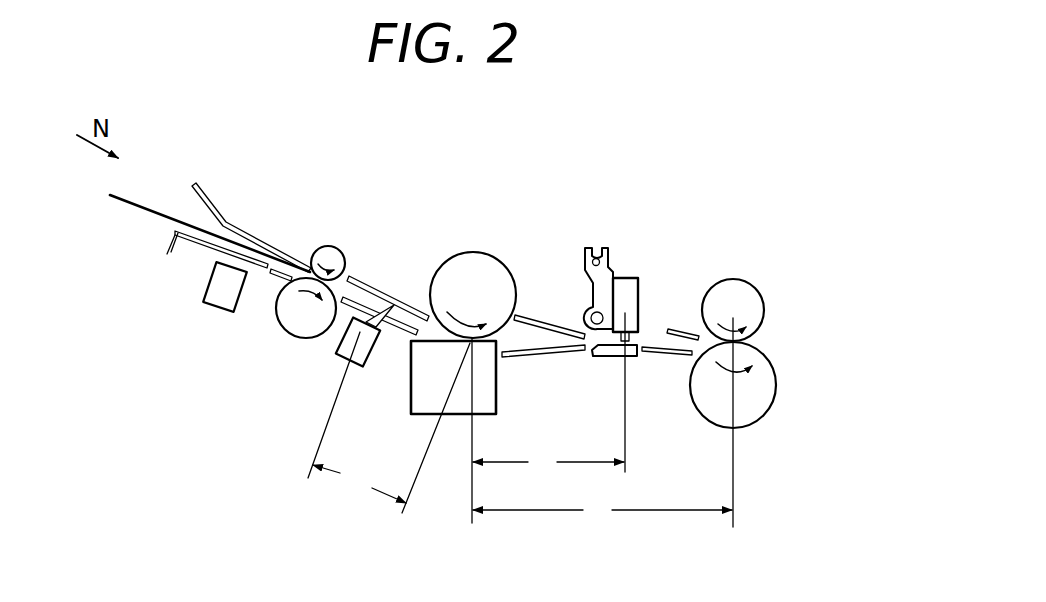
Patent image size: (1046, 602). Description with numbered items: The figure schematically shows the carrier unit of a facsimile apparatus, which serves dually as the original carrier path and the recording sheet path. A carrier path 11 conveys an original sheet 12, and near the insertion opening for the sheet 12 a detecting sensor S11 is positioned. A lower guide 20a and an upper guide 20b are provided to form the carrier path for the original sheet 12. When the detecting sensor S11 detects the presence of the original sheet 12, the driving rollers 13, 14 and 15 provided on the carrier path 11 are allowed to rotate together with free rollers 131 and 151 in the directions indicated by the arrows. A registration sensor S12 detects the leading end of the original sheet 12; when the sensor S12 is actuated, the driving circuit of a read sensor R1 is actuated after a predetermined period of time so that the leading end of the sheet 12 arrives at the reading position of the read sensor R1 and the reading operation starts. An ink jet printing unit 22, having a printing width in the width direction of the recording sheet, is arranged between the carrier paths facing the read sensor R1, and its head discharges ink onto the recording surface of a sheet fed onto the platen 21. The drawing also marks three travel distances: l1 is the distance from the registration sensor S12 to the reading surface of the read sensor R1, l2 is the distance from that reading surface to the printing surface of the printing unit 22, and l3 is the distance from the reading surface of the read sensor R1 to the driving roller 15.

The carrier path 11 is at (376, 282).
The original sheet 12 is at (146, 207).
The driving roller 13 is at (288, 320).
The free roller 131 is at (331, 246).
The driving roller 14 is at (497, 258).
The driving roller 15 is at (770, 393).
The free roller 151 is at (746, 294).
The lower guide 20a is at (166, 243).
The upper guide 20b is at (203, 197).
The platen 21 is at (617, 358).
The ink jet printing unit 22 is at (636, 277).
The detecting sensor S11 is at (218, 294).
The registration sensor S12 is at (341, 343).
The read sensor R1 is at (460, 418).
The distance from registration sensor to reading surface l1 is at (359, 484).
The distance from reading surface to printing surface l2 is at (548, 459).
The distance from reading surface to driving roller l3 is at (602, 508).